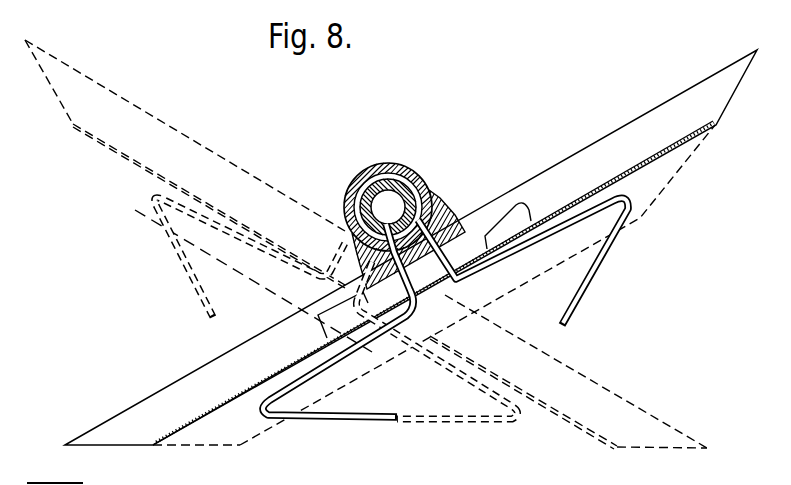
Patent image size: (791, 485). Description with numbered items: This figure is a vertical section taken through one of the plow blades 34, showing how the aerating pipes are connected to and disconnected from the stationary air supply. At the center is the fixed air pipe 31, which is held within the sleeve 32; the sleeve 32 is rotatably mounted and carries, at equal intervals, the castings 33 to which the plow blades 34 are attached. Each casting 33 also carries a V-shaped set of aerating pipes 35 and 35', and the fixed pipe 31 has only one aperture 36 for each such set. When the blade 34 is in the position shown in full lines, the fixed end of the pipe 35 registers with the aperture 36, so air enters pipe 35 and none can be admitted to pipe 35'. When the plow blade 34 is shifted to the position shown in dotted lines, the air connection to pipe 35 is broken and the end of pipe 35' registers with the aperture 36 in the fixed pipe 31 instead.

The fixed air pipe 31 is at (410, 190).
The sleeve 32 is at (358, 186).
The casting 33 is at (455, 212).
The plow blade 34 is at (638, 405).
The aerating pipe 35 is at (303, 330).
The aerating pipe 35' is at (500, 337).
The aperture 36 is at (358, 229).